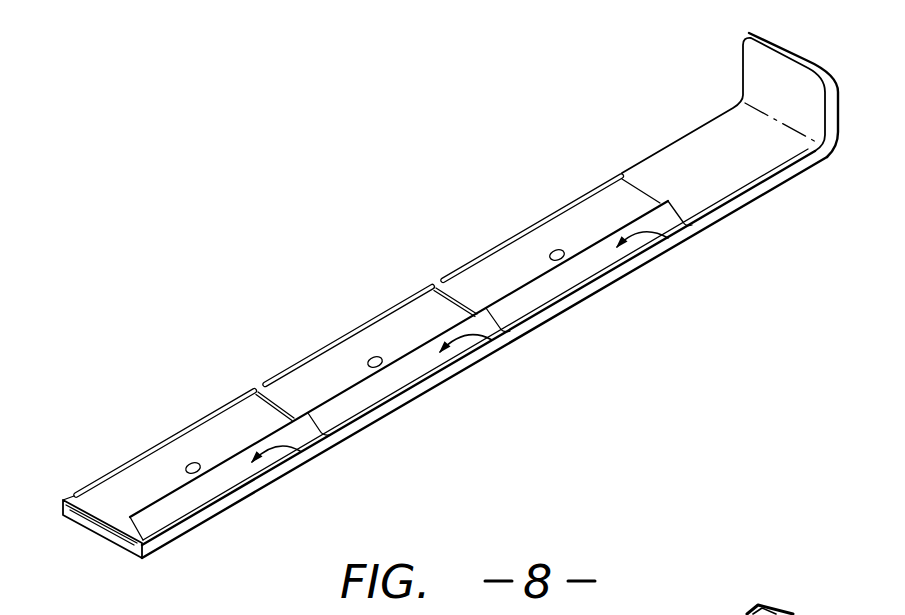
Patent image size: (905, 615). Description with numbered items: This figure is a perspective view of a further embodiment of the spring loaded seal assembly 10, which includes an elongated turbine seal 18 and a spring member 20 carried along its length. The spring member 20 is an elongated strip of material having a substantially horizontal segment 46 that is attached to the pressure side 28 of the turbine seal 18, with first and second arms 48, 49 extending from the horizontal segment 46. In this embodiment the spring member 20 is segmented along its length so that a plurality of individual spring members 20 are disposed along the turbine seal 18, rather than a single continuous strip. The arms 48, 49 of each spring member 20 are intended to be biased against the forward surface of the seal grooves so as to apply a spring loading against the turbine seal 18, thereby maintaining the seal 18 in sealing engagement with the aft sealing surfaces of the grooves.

The spring loaded seal assembly 10 is at (347, 243).
The turbine seal 18 is at (690, 133).
The spring member 20 is at (668, 238).
The pressure side 28 is at (724, 181).
The horizontal segment 46 is at (108, 514).
The first arm 48 is at (484, 257).
The second arm 49 is at (553, 285).